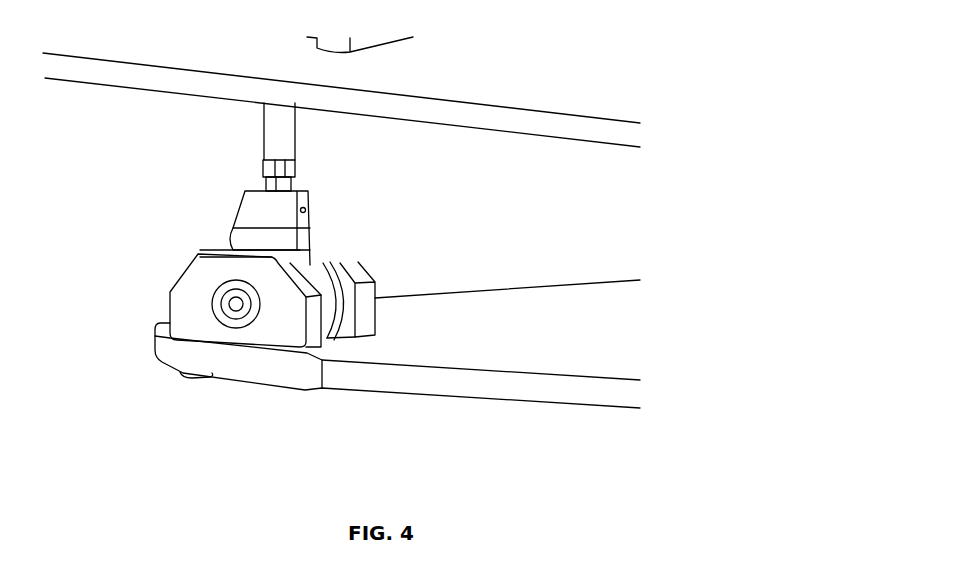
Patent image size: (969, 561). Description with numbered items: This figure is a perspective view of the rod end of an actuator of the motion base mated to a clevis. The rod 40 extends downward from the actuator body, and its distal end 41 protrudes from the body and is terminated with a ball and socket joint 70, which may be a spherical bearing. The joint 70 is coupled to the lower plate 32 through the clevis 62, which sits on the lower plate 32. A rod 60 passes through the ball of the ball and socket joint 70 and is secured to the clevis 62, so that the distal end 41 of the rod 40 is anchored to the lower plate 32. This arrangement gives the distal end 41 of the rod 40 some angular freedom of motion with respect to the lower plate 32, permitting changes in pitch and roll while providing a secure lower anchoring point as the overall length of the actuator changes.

The lower plate 32 is at (368, 380).
The rod 40 is at (246, 184).
The distal end 41 is at (284, 137).
The rod 60 is at (222, 306).
The clevis 62 is at (182, 290).
The ball and socket joint 70 is at (313, 262).